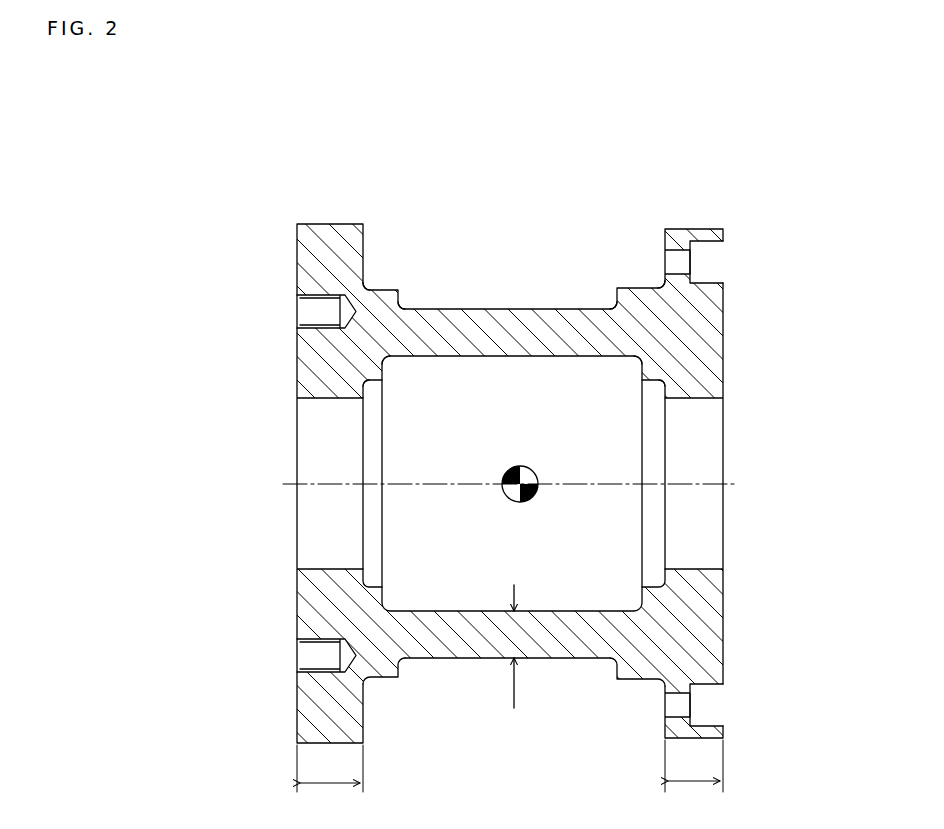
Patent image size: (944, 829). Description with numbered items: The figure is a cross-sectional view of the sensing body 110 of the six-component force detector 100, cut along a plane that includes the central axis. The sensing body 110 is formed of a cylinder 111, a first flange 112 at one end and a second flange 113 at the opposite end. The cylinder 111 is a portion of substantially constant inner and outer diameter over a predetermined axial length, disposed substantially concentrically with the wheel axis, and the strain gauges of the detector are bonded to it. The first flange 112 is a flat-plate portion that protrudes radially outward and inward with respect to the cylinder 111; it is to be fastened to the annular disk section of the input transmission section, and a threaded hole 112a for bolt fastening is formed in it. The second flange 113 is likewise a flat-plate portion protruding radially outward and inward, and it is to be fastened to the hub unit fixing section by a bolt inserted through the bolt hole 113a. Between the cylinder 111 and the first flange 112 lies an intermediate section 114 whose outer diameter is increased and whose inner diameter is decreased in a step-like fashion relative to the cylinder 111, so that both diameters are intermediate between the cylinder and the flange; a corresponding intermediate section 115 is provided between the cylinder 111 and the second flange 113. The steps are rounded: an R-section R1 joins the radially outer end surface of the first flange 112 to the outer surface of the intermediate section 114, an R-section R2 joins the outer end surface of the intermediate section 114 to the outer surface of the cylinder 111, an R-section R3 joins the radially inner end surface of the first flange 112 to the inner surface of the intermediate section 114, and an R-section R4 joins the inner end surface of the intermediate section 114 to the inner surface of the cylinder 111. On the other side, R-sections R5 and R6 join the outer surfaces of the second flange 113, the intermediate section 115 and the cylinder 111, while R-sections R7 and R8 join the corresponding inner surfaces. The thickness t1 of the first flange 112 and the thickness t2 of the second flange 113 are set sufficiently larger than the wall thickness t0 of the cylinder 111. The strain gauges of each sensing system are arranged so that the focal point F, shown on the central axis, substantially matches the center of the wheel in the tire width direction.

The six-component force detector 100 is at (242, 208).
The sensing body 110 is at (472, 437).
The cylinder 111 is at (497, 309).
The first flange 112 is at (328, 224).
The threaded hole 112a is at (312, 293).
The second flange 113 is at (697, 229).
The bolt hole 113a is at (713, 244).
The intermediate section 114 is at (378, 637).
The intermediate section 115 is at (646, 628).
The R-section R1 is at (368, 285).
The R-section R2 is at (405, 306).
The R-section R3 is at (370, 384).
The R-section R4 is at (388, 361).
The R-section R5 is at (660, 287).
The R-section R6 is at (613, 306).
The R-section R7 is at (656, 384).
The R-section R8 is at (633, 362).
The focal point F is at (510, 491).
The thickness of the cylinder t0 is at (528, 647).
The thickness of the first flange t1 is at (330, 777).
The thickness of the second flange t2 is at (694, 774).